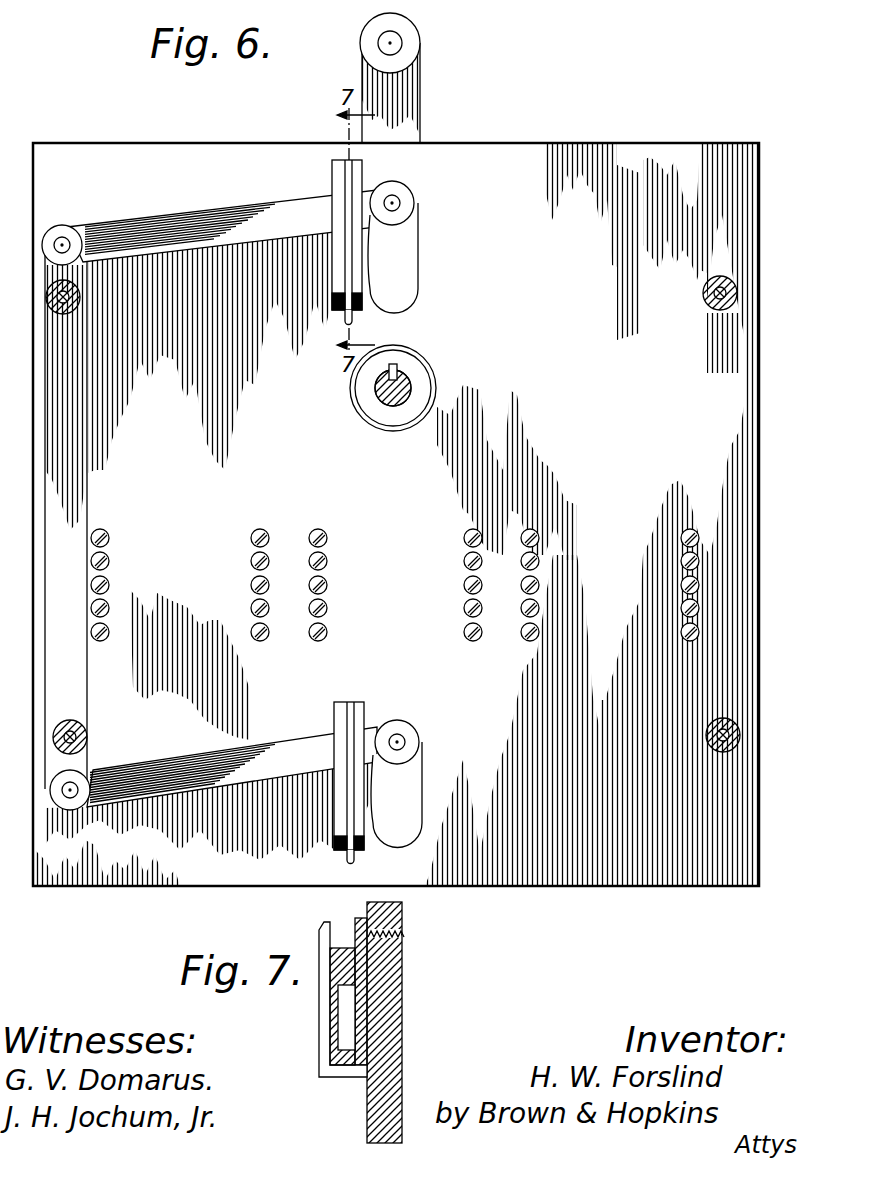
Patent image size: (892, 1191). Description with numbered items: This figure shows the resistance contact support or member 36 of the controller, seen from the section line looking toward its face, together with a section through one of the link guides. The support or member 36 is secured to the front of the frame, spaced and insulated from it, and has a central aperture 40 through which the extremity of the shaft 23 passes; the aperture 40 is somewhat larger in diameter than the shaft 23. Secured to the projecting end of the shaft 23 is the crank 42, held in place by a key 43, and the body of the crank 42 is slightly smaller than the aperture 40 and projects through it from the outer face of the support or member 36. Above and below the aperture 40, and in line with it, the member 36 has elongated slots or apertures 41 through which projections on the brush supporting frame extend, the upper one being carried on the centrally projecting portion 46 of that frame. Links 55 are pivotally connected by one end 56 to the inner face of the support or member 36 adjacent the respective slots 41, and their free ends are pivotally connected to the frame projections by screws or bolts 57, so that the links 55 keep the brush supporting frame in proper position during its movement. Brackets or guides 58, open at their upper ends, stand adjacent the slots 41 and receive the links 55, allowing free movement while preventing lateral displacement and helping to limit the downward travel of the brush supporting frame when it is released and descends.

In FIG. 6, the resistance contact support or member 36 is at (488, 158).
In FIG. 7, the resistance contact support or member 36 is at (400, 1047).
In FIG. 6, the centrally projecting portion 46 is at (408, 105).
In FIG. 6, the links 55 is at (188, 222).
In FIG. 7, the links 55 is at (332, 1000).
In FIG. 6, the pivoted end of link 56 is at (72, 230).
In FIG. 6, the screws or bolts 57 is at (400, 205).
In FIG. 6, the brackets or guides 58 is at (335, 170).
In FIG. 7, the brackets or guides 58 is at (332, 1068).
In FIG. 6, the elongated slots or apertures 41 is at (403, 273).
In FIG. 6, the crank 42 is at (370, 397).
In FIG. 6, the aperture 40 is at (418, 356).
In FIG. 6, the shaft 23 is at (405, 386).
In FIG. 6, the key 43 is at (397, 367).